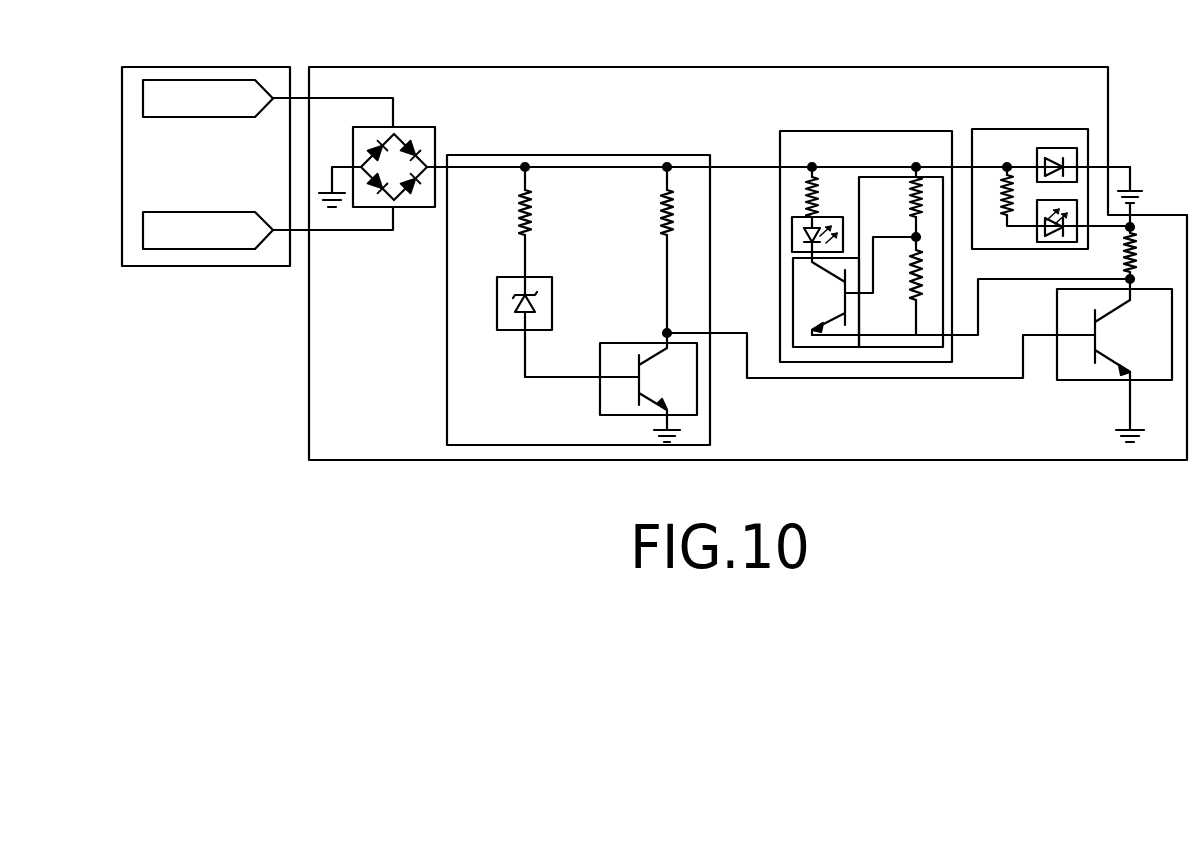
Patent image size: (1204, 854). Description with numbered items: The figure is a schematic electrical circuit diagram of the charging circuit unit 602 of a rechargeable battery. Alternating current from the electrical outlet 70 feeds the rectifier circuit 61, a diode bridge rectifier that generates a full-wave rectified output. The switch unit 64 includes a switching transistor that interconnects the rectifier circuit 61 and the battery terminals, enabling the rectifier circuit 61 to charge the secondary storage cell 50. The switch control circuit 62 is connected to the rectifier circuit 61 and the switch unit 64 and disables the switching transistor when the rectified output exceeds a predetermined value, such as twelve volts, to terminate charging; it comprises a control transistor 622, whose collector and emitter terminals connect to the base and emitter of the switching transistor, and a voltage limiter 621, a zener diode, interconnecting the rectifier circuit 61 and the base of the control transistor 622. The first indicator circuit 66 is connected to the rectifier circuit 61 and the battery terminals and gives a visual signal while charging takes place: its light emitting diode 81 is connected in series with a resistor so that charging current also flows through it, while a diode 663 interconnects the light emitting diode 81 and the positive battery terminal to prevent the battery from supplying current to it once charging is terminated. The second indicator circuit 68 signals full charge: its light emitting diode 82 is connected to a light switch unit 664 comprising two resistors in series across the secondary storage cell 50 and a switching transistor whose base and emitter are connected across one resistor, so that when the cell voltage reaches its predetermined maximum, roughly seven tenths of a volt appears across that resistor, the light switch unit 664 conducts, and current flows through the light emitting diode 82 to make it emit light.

The electrical outlet 70 is at (228, 67).
The charging circuit unit 602 is at (1078, 66).
The rectifier circuit 61 is at (417, 125).
The switch control circuit 62 is at (585, 155).
The voltage limiter 621 is at (500, 277).
The control transistor 622 is at (618, 343).
The second indicator circuit 68 is at (858, 131).
The light emitting diode 82 is at (792, 237).
The light switch unit 664 is at (808, 280).
The first indicator circuit 66 is at (992, 129).
The diode 663 is at (1052, 148).
The light emitting diode 81 is at (1050, 242).
The secondary storage cell 50 is at (1143, 200).
The switch unit 64 is at (1158, 289).